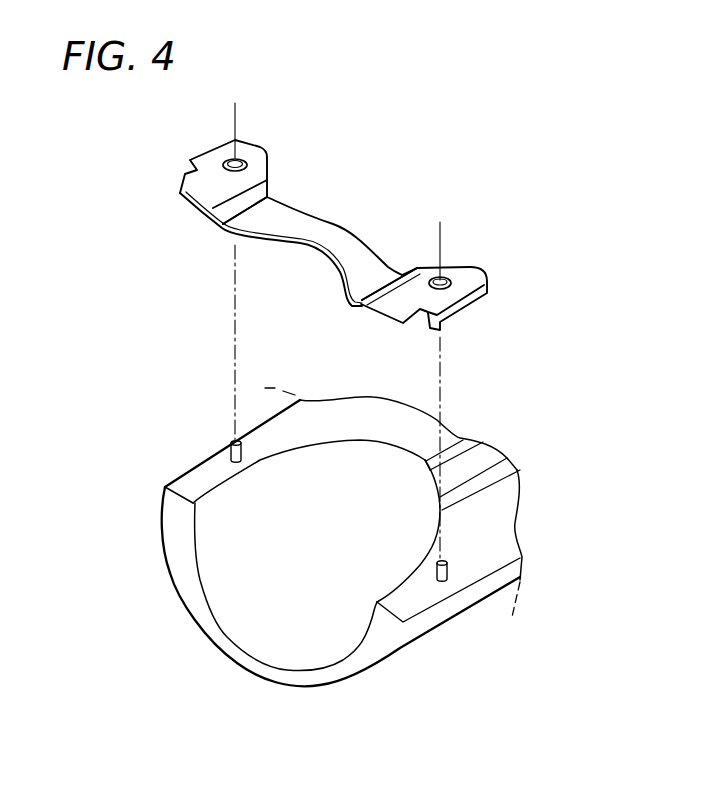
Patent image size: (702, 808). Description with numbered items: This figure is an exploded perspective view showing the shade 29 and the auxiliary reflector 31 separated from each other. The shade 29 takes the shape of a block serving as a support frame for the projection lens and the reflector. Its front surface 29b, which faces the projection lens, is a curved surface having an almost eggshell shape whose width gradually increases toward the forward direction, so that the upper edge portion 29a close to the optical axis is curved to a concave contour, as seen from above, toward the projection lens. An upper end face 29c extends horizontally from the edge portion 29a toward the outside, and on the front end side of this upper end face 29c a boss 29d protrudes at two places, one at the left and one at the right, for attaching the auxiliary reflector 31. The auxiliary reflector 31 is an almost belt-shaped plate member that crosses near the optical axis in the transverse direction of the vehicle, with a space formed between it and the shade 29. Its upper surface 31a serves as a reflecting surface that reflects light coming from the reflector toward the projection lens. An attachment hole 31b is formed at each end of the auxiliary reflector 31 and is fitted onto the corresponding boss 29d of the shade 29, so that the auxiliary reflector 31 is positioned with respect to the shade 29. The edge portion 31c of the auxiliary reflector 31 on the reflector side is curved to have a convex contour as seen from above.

The shade 29 is at (170, 575).
The edge portion 29a is at (375, 440).
The front surface 29b is at (265, 618).
The upper end face 29c is at (195, 486).
The boss 29d is at (230, 443).
The auxiliary reflector 31 is at (332, 211).
The upper surface 31a is at (343, 273).
The attachment hole 31b is at (238, 160).
The edge portion 31c is at (355, 231).